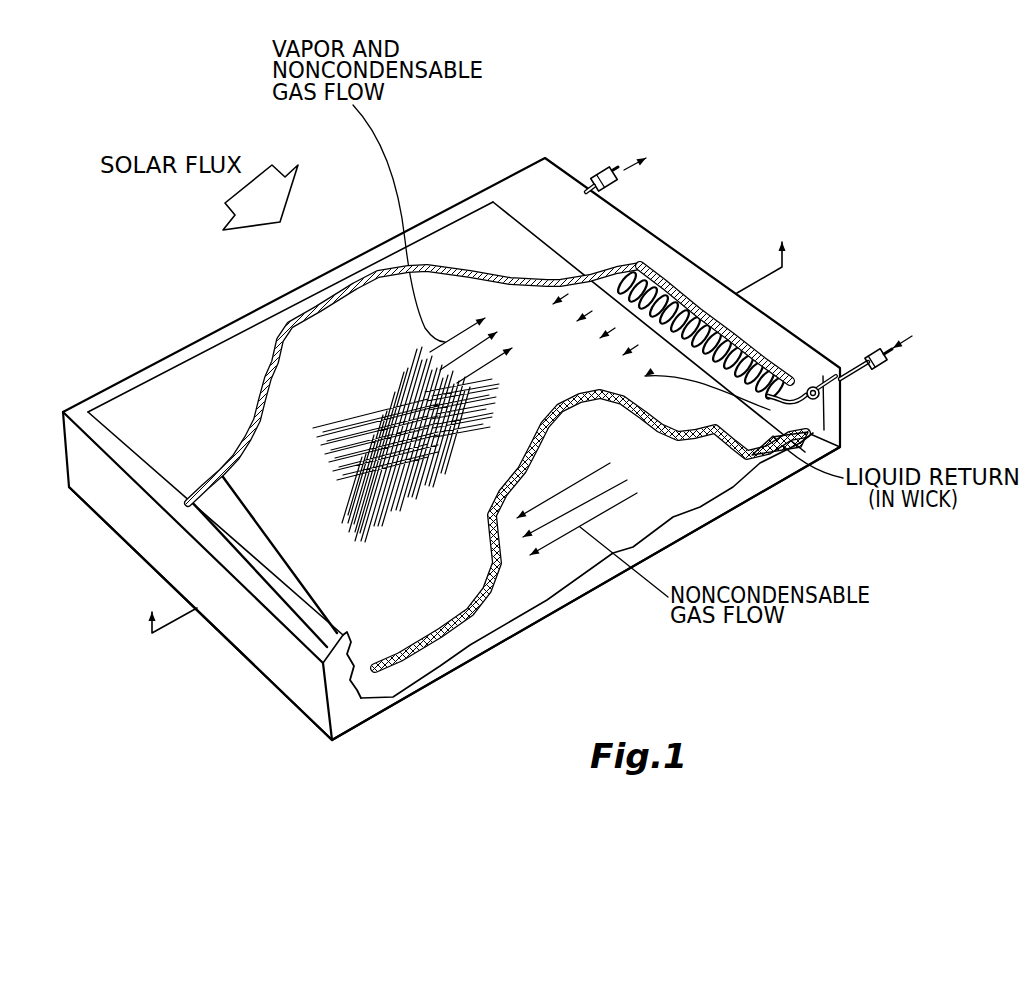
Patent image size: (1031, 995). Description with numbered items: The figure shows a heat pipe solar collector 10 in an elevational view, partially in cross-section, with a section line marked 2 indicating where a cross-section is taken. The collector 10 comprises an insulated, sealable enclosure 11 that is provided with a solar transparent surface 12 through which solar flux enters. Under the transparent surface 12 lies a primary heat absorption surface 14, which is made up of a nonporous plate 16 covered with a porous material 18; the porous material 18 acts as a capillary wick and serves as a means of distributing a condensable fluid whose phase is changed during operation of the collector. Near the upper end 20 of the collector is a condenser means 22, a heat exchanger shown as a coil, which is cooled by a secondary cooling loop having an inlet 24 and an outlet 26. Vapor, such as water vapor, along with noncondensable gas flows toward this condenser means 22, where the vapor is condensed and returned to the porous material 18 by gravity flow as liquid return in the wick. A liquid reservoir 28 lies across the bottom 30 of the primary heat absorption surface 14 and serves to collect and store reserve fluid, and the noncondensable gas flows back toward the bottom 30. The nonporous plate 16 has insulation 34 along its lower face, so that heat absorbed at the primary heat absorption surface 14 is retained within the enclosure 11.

The section line 2- 2 is at (465, 442).
The heat pipe solar collector 10 is at (273, 688).
The insulated, sealable enclosure 11 is at (98, 515).
The solar transparent surface 12 is at (463, 242).
The primary heat absorption surface 14 is at (498, 481).
The nonporous plate 16 is at (260, 500).
The porous material 18 is at (392, 398).
The upper end 20 is at (700, 267).
The condenser means 22 is at (733, 350).
The inlet 24 is at (880, 366).
The outlet 26 is at (597, 172).
The liquid reservoir 28 is at (413, 663).
The bottom 30 is at (363, 672).
The insulation 34 is at (470, 637).